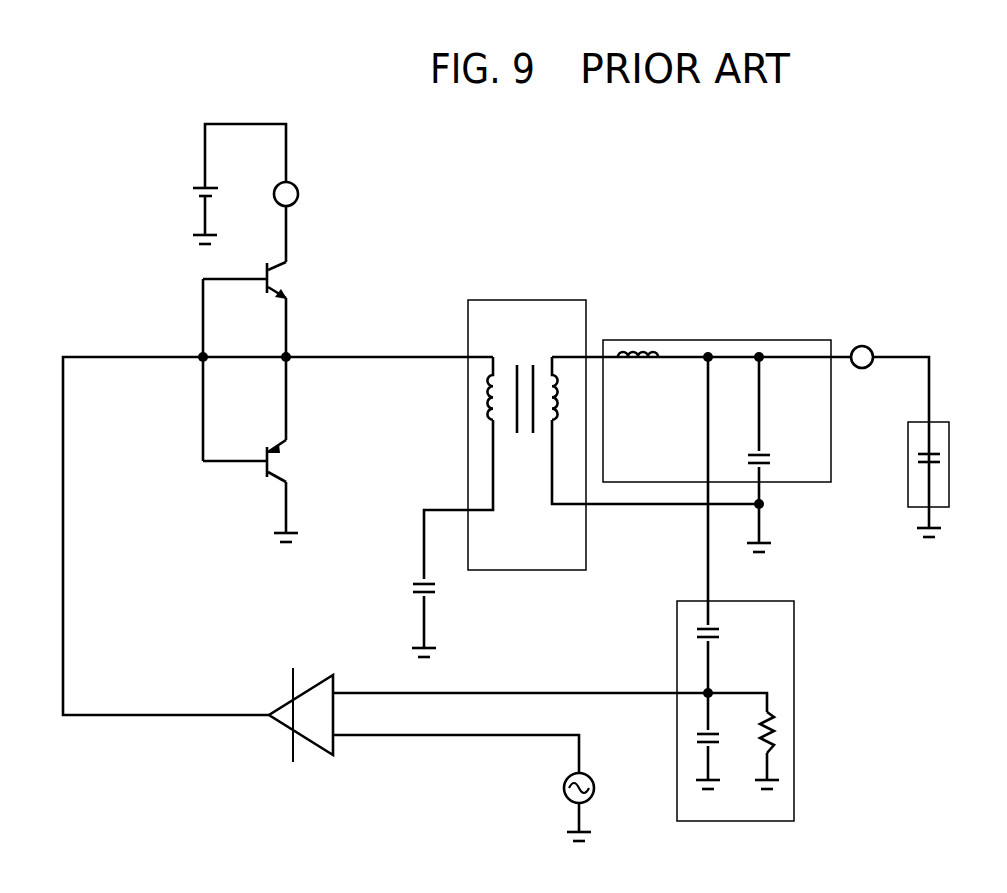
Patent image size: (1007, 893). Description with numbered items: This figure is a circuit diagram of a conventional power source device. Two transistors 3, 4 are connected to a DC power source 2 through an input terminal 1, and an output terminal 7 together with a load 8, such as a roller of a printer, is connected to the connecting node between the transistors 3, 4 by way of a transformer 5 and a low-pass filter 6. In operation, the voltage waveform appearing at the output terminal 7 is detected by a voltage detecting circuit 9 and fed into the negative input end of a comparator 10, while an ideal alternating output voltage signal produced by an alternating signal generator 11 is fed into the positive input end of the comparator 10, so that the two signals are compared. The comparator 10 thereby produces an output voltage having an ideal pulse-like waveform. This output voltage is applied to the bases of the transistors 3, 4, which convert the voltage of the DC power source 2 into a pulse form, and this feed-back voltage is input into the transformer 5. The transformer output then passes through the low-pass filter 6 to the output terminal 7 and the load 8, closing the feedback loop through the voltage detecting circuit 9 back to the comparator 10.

The input terminal 1 is at (300, 193).
The DC power source 2 is at (191, 190).
The transistor 3 is at (288, 276).
The transistor 4 is at (288, 457).
The transformer 5 is at (528, 299).
The low-pass filter 6 is at (722, 339).
The output terminal 7 is at (866, 345).
The load 8 is at (944, 420).
The voltage detecting circuit 9 is at (796, 701).
The comparator 10 is at (284, 727).
The alternating signal generator 11 is at (563, 790).